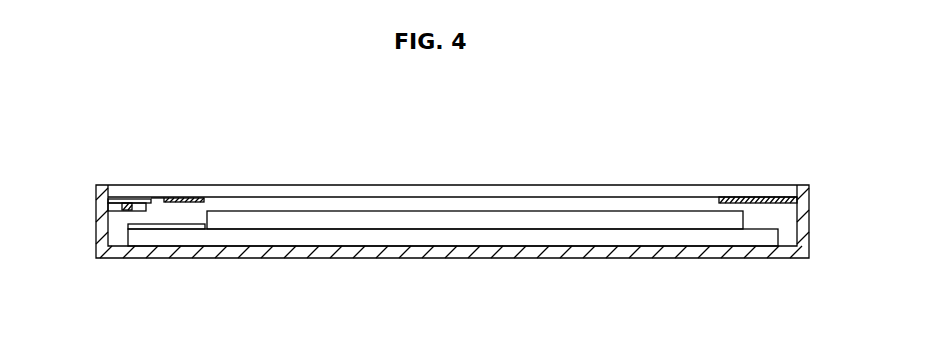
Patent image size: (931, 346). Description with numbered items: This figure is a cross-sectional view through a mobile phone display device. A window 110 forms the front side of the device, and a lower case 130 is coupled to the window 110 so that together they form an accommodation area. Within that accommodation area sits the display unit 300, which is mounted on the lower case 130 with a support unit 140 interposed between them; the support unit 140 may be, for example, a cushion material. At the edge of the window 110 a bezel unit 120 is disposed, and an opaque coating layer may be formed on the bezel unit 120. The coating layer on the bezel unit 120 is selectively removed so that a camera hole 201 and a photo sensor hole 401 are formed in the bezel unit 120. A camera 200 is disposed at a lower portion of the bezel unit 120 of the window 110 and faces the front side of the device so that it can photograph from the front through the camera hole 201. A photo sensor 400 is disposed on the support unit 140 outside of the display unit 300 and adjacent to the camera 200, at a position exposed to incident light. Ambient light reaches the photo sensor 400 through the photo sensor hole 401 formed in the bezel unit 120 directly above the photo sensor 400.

The window 110 is at (517, 187).
The bezel unit 120 is at (178, 199).
The lower case 130 is at (670, 248).
The support unit 140 is at (408, 236).
The camera 200 is at (122, 208).
The camera hole 201 is at (128, 201).
The display unit 300 is at (518, 220).
The photo sensor 400 is at (168, 229).
The photo sensor hole 401 is at (157, 199).